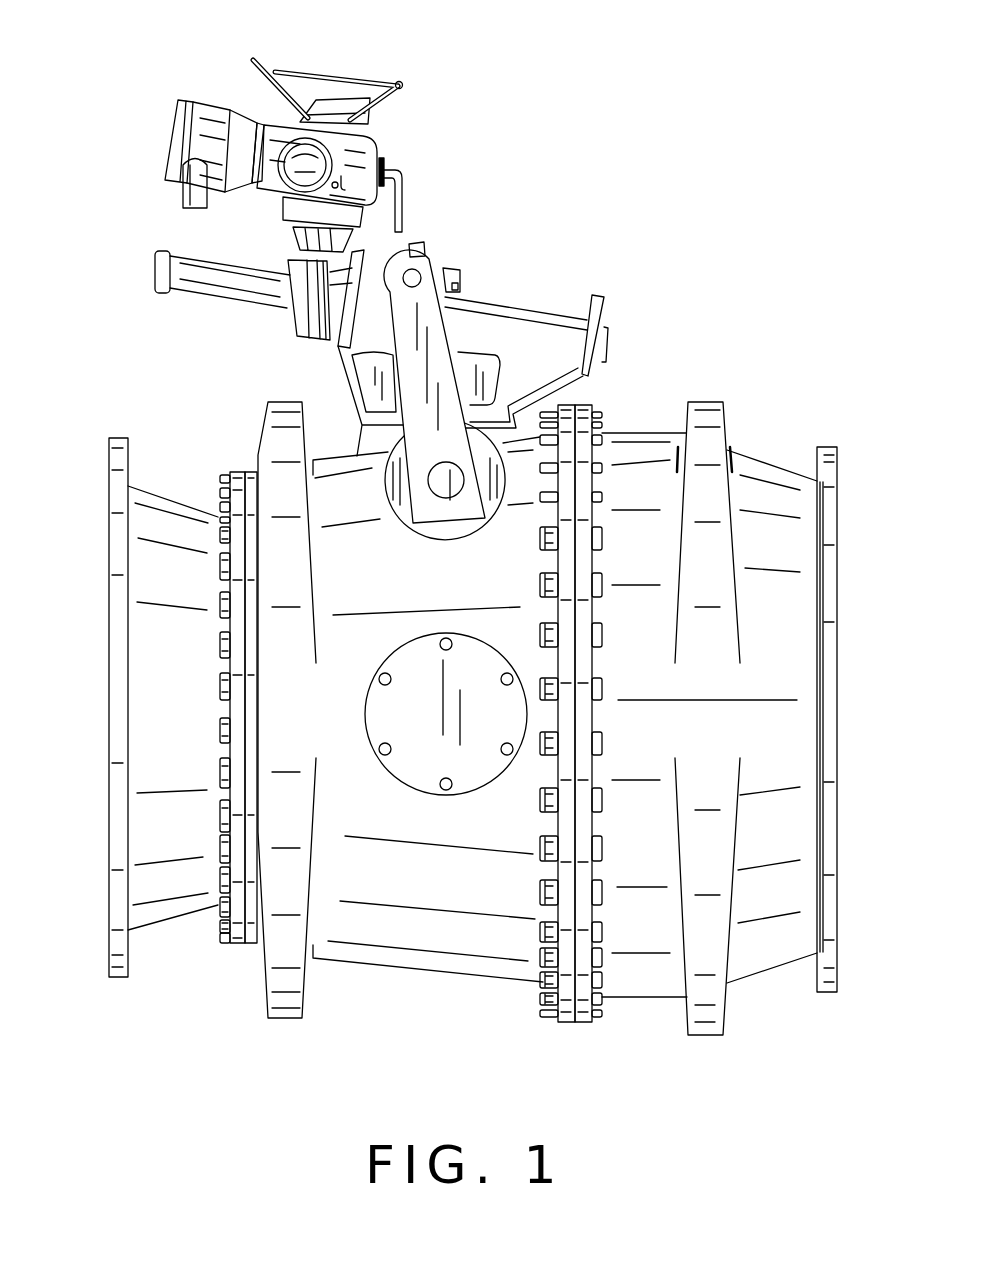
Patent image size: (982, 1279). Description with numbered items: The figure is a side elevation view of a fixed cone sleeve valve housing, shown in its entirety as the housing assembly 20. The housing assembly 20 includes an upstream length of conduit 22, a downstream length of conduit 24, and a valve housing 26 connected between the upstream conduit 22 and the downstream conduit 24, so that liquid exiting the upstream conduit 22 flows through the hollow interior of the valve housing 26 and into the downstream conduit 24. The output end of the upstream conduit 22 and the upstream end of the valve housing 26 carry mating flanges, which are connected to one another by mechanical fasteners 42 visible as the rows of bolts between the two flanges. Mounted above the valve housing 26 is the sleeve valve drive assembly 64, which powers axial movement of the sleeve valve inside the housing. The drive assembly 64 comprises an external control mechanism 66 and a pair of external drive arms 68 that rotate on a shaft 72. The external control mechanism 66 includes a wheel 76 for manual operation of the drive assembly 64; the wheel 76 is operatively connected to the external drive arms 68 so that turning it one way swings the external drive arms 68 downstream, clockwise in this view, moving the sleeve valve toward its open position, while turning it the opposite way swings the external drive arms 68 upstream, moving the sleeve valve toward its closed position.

The housing assembly 20 is at (453, 686).
The upstream length of conduit 22 is at (175, 486).
The downstream length of conduit 24 is at (753, 988).
The valve housing 26 is at (385, 975).
The mechanical fasteners 42 is at (218, 815).
The sleeve valve drive assembly 64 is at (418, 300).
The external control mechanism 66 is at (352, 168).
The external drive arms 68 is at (430, 345).
The shaft 72 is at (446, 478).
The wheel 76 is at (413, 93).